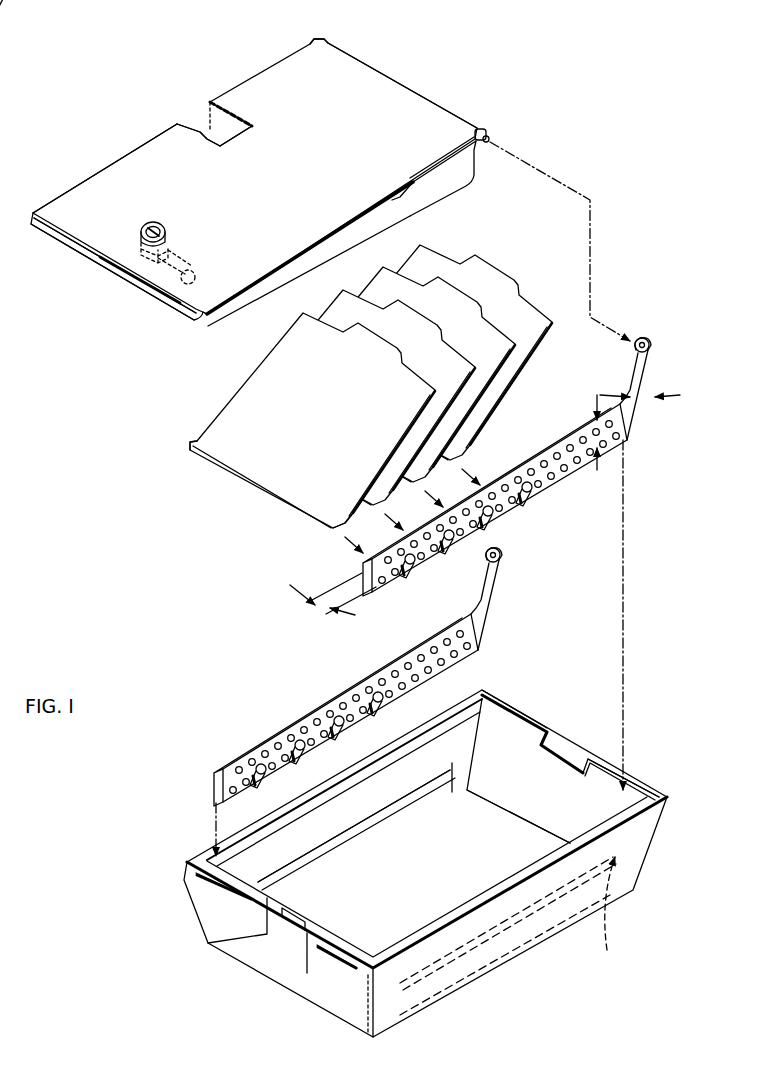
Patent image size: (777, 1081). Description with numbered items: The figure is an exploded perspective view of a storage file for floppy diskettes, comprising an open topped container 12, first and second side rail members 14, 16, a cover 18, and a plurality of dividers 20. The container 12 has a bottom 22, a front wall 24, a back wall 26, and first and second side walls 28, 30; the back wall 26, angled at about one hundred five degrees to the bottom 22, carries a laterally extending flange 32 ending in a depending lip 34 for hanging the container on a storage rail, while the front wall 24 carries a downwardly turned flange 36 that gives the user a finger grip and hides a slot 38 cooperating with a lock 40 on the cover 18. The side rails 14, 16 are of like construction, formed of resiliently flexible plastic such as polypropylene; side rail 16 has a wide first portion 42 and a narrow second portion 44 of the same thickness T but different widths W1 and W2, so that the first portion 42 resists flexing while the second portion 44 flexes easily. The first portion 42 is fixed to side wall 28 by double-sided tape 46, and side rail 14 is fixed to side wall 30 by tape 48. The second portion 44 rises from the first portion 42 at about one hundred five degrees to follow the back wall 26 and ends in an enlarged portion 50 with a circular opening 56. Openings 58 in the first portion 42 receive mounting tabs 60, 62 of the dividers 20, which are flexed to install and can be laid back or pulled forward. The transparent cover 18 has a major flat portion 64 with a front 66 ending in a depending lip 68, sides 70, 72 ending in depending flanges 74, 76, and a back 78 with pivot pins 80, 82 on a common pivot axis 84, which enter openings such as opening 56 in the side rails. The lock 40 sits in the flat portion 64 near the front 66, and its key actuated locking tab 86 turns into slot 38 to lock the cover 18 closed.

The open topped container 12 is at (408, 849).
The first side rail member 14 is at (262, 733).
The second side rail member 16 is at (347, 298).
The cover 18 is at (287, 177).
The dividers 20 is at (351, 415).
The bottom 22 is at (600, 855).
The front wall 24 is at (305, 995).
The back wall 26 is at (592, 755).
The first side wall 28 is at (323, 817).
The second side wall 30 is at (498, 965).
The laterally extending flange 32 is at (500, 690).
The depending lip 34 is at (548, 733).
The laterally extending flange 36 is at (215, 897).
The slot 38 is at (285, 935).
The lock 40 is at (167, 236).
The first portion 42 is at (552, 455).
The second portion 44 is at (628, 378).
The double-sided tape 46 is at (512, 936).
The double-sided tape 48 is at (417, 797).
The enlarged portion 50 is at (637, 338).
The circular opening 56 is at (650, 350).
The openings 58 is at (500, 505).
The mounting tab 60 is at (192, 450).
The mounting tab 62 is at (347, 545).
The major flat portion 64 is at (110, 182).
The front 66 is at (133, 292).
The depending lip 68 is at (100, 268).
The side 70 is at (222, 95).
The side 72 is at (400, 205).
The depending flange 74 is at (205, 132).
The depending flange 76 is at (372, 234).
The back 78 is at (383, 70).
The first pivot pin 80 is at (320, 40).
The second pivot pin 82 is at (491, 137).
The pivot axis 84 is at (565, 178).
The key actuated locking tab 86 is at (176, 305).
The thickness dimension T is at (370, 614).
The width W1 is at (593, 425).
The width W2 is at (647, 396).